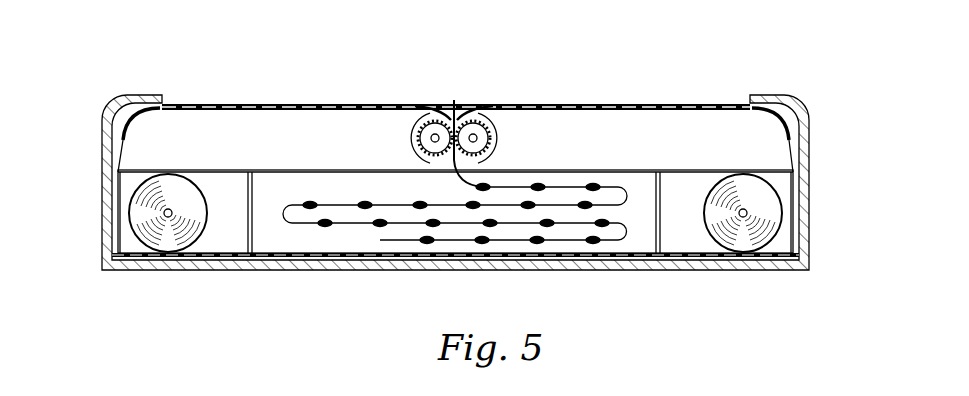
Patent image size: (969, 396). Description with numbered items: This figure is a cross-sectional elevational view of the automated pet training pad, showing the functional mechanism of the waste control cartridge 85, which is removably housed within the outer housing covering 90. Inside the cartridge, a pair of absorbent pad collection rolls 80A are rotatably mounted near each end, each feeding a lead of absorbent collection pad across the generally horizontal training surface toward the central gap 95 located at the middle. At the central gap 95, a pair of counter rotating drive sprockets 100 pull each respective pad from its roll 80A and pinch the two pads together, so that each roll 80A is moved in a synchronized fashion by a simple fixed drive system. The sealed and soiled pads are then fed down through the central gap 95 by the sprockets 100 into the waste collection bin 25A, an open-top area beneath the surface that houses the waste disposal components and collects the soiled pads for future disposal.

The outer housing covering 90 is at (810, 137).
The waste control cartridge 85 is at (775, 268).
The absorbent pad collection rolls 80A is at (658, 103).
The waste collection bin 25A is at (326, 187).
The counter rotating drive sprockets 100 is at (432, 102).
The central gap 95 is at (457, 100).